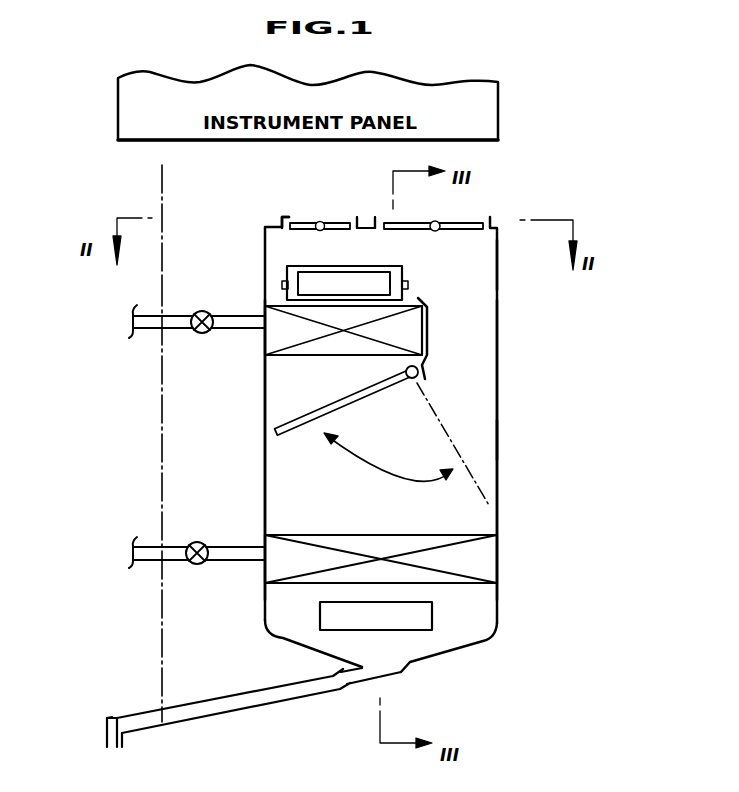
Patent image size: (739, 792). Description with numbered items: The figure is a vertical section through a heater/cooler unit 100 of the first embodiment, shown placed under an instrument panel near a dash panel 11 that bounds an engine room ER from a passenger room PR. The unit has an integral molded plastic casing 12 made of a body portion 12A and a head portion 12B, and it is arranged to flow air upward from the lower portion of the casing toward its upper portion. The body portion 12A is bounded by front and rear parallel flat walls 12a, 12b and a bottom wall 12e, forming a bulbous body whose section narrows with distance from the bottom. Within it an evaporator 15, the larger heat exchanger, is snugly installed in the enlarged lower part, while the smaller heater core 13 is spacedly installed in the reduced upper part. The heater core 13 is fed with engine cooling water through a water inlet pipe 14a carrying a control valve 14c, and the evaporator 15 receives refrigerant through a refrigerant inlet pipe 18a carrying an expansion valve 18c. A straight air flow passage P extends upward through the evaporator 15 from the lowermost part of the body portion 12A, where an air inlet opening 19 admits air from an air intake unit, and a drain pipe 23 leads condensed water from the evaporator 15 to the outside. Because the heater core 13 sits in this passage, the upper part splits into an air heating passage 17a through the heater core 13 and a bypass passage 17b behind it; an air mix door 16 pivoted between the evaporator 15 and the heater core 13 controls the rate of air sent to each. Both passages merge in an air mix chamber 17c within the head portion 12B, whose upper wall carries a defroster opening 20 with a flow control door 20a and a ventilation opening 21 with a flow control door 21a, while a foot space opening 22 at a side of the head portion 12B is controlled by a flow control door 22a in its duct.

The heater/cooler unit 100 is at (683, 152).
The dash panel 11 is at (158, 440).
The casing 12 is at (254, 258).
The front flat wall 12a is at (265, 462).
The rear flat wall 12b is at (497, 477).
The body portion 12A is at (523, 437).
The head portion 12B is at (519, 265).
The bottom wall 12e is at (420, 663).
The heater core 13 is at (408, 327).
The water inlet pipe 14a is at (147, 329).
The control valve 14c is at (200, 334).
The evaporator 15 is at (480, 560).
The air mix door 16 is at (300, 428).
The air heating passage 17a is at (290, 386).
The bypass passage 17b is at (477, 373).
The air mix chamber 17c is at (428, 280).
The refrigerant inlet pipe 18a is at (145, 557).
The expansion valve 18c is at (197, 566).
The air inlet opening 19 is at (413, 613).
The defroster opening 20 is at (285, 222).
The flow control door 20a is at (330, 221).
The ventilation opening 21 is at (377, 217).
The flow control door 21a is at (407, 222).
The foot space opening 22 is at (333, 280).
The flow control door 22a is at (367, 283).
The drain pipe 23 is at (240, 722).
The straight air flow passage P is at (497, 436).
The engine room ER is at (156, 192).
The passenger room PR is at (211, 192).